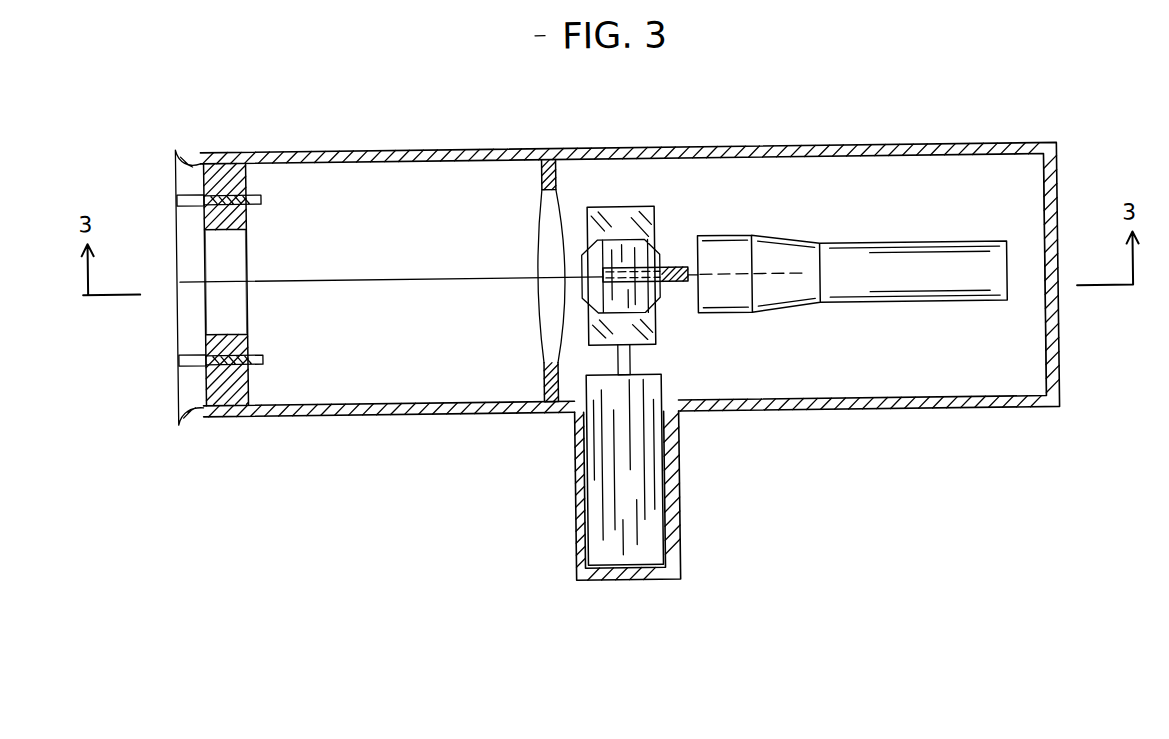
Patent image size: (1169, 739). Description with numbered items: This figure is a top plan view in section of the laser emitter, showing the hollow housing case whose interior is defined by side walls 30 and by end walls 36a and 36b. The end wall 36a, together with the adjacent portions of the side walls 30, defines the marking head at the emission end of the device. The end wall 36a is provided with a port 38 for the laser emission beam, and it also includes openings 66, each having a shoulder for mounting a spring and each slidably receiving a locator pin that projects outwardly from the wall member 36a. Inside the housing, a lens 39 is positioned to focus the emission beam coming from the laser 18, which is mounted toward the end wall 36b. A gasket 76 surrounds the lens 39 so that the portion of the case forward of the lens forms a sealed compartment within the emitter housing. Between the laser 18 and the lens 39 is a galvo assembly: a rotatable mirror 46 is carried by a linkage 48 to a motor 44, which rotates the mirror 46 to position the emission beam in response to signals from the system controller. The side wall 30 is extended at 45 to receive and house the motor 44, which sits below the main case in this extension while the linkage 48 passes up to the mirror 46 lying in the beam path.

The laser 18 is at (874, 285).
The side walls 30 is at (790, 159).
The end wall 36a is at (248, 166).
The end wall 36b is at (1046, 202).
The port 38 is at (230, 304).
The lens 39 is at (549, 222).
The motor 44 is at (594, 474).
The extension of top wall and side wall 45 is at (676, 503).
The rotatable mirror 46 is at (618, 257).
The linkage 48 is at (673, 268).
The openings 66 is at (207, 334).
The gasket 76 is at (541, 166).